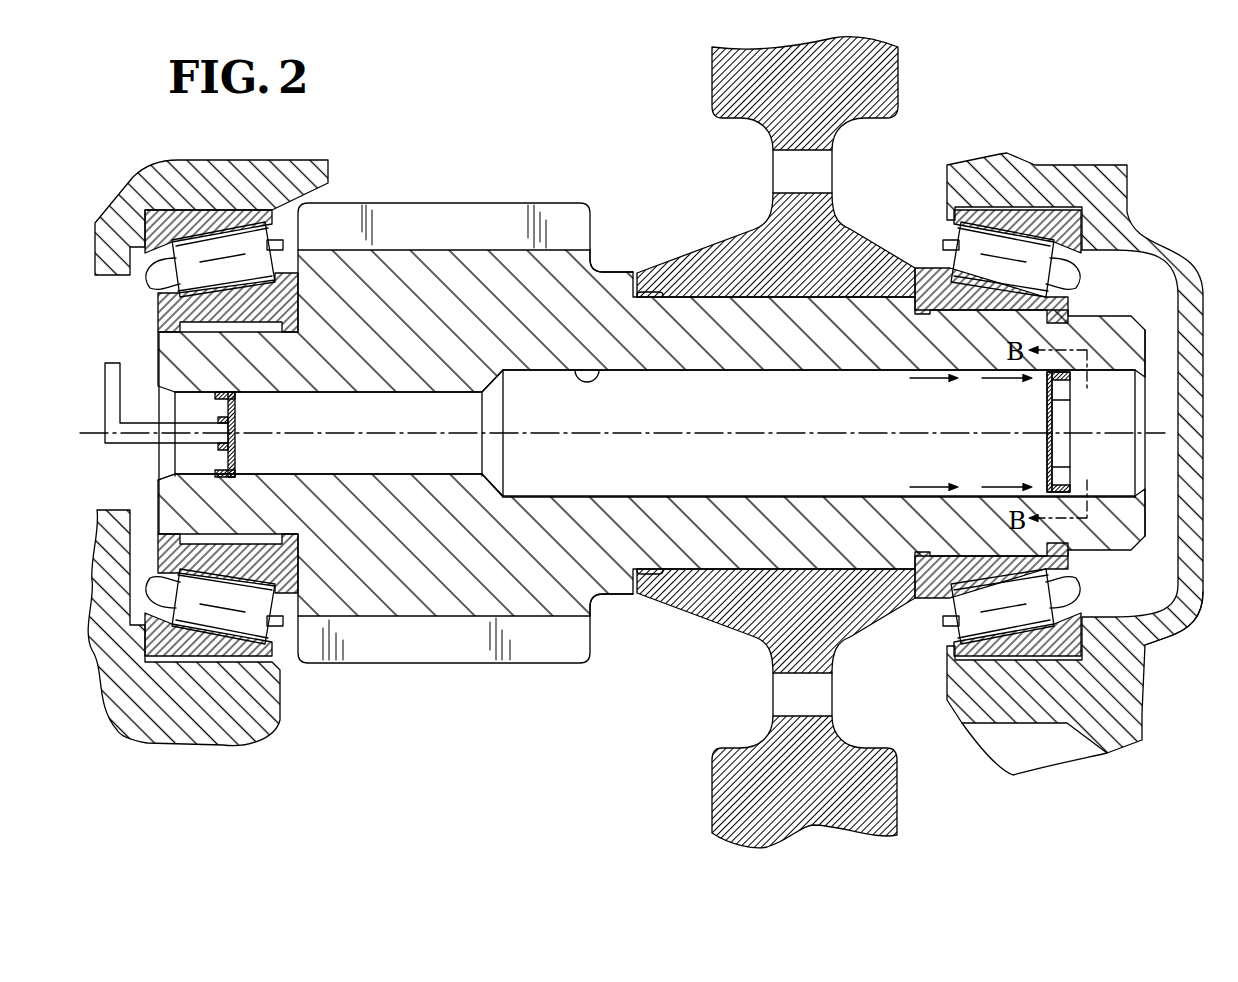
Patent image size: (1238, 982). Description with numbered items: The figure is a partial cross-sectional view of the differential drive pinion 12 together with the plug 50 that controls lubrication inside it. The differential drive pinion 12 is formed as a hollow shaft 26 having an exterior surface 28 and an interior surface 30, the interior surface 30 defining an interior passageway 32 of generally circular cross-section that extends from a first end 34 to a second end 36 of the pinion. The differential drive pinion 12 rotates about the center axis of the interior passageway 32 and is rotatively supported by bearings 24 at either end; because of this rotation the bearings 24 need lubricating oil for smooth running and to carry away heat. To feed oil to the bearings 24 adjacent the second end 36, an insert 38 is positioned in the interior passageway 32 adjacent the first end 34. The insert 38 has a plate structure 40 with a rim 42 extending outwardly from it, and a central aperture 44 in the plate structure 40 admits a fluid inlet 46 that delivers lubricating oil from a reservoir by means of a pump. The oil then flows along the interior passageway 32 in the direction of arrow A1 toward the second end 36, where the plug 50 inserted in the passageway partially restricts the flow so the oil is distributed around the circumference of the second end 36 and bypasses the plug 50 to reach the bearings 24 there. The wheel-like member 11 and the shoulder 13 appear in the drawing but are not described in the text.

The wheel 11 is at (880, 82).
The differential drive pinion 12 is at (1118, 283).
The axle shoulder 13 is at (430, 215).
The bearings 24 is at (236, 273).
The hollow shaft 26 is at (821, 343).
The exterior surface 28 is at (612, 270).
The interior surface 30 is at (580, 370).
The interior passageway 32 is at (687, 475).
The first end 34 is at (158, 510).
The second end 36 is at (1178, 625).
The insert 38 is at (243, 400).
The plate structure 40 is at (236, 455).
The rim 42 is at (230, 480).
The central aperture 44 is at (236, 418).
The fluid inlet 46 is at (102, 385).
The plug 50 is at (1036, 455).
The arrow A1 is at (932, 378).